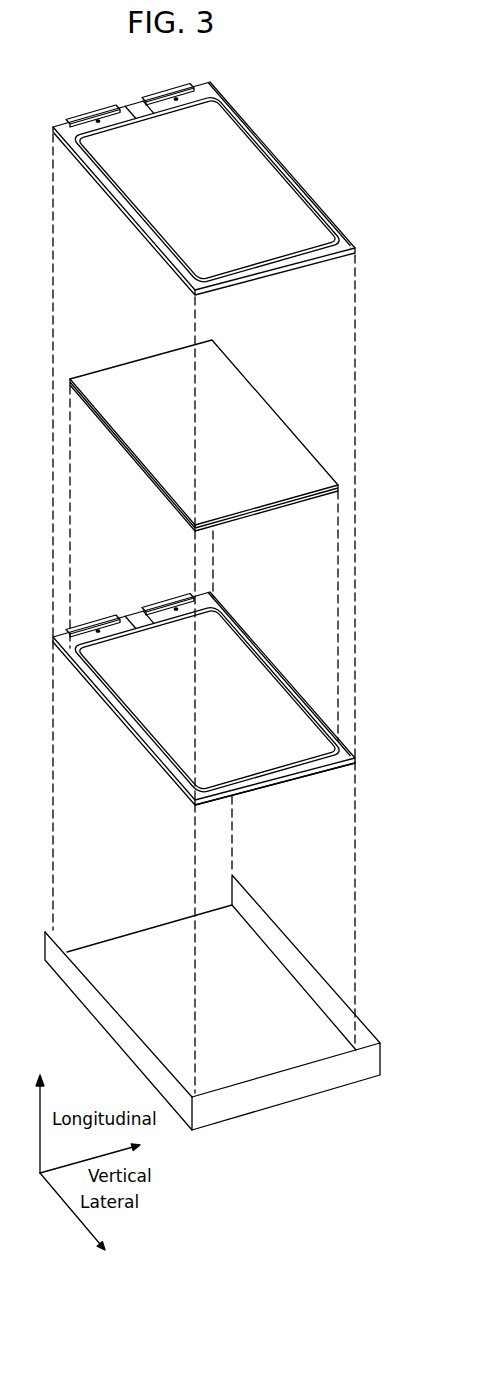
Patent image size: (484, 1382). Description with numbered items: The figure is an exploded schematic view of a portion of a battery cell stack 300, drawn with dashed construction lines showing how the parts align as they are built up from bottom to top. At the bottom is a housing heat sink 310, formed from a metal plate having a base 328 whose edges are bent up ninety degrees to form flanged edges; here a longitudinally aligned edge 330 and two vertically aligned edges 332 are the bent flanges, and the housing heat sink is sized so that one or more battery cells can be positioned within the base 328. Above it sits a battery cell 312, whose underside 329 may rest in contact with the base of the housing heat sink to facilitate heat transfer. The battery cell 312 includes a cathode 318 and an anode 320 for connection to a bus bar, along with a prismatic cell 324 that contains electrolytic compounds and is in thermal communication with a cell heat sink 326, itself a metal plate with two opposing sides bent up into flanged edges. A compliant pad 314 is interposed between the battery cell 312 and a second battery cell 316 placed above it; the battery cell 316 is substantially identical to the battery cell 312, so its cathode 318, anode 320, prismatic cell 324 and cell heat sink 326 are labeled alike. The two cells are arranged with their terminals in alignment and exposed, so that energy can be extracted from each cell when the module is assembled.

The battery cell stack 300 is at (362, 93).
The housing heat sink 310 is at (313, 926).
The battery cell 312 is at (298, 634).
The compliant pad 314 is at (294, 383).
The battery cell 316 is at (304, 132).
The cathode 318 is at (90, 104).
The anode 320 is at (163, 87).
The prismatic cell 324 is at (218, 196).
The cell heat sink 326 is at (297, 260).
The base 328 is at (132, 948).
The underside 329 is at (265, 799).
The longitudinally aligned edge 330 is at (280, 1092).
The vertically aligned edges 332 is at (320, 977).